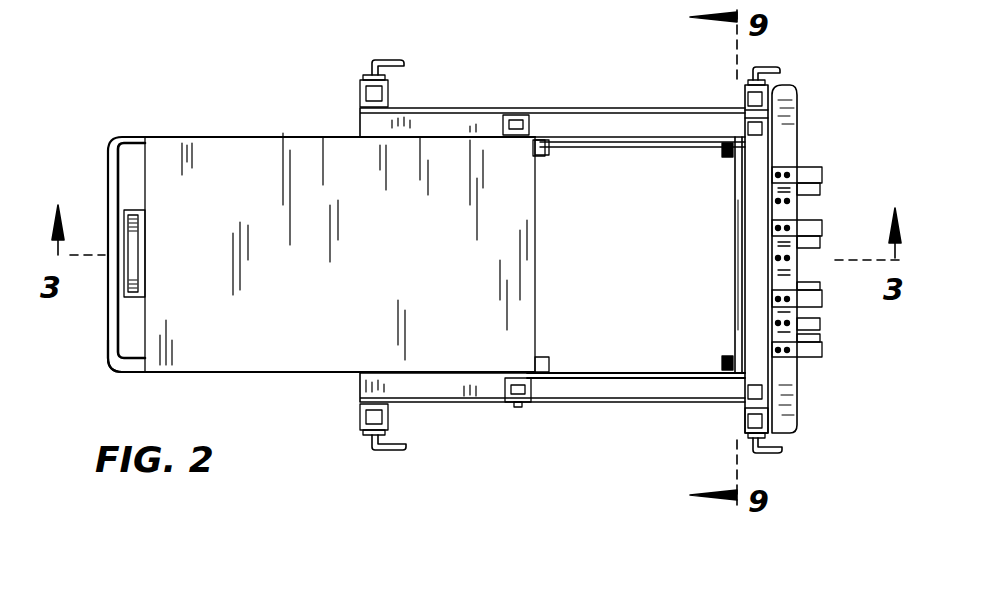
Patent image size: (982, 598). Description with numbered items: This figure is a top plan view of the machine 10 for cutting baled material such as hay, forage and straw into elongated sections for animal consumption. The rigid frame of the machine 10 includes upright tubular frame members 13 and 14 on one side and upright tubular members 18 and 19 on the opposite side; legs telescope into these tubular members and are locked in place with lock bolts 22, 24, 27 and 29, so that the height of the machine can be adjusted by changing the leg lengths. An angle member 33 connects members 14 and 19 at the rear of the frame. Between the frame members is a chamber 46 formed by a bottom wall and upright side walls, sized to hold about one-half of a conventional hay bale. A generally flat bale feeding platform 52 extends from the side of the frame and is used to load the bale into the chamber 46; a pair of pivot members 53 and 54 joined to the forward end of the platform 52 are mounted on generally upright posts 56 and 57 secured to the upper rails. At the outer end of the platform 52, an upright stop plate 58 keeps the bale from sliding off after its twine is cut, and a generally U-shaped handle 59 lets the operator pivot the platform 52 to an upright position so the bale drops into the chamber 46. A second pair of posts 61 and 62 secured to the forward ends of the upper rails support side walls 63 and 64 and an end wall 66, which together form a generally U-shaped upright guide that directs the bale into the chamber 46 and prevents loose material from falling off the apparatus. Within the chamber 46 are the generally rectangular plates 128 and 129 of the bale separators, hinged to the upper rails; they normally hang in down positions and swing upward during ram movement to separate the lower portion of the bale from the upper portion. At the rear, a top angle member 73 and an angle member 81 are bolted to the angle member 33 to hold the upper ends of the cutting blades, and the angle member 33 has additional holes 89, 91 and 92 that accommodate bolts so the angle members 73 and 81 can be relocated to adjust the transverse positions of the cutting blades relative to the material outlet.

The machine 10 is at (641, 108).
The upright tubular frame member 13 is at (360, 418).
The upright tubular frame member 14 is at (745, 421).
The upright tubular member 18 is at (360, 92).
The upright tubular member 19 is at (745, 95).
The lock bolt 22 is at (388, 450).
The lock bolt 24 is at (792, 448).
The lock bolt 27 is at (384, 60).
The lock bolt 29 is at (778, 70).
The angle member 33 is at (790, 112).
The chamber 46 is at (612, 284).
The bale feeding platform 52 is at (262, 356).
The pivot member 53 is at (517, 408).
The pivot member 54 is at (514, 110).
The post 56 is at (505, 390).
The post 57 is at (503, 122).
The stop plate 58 is at (138, 238).
The handle 59 is at (114, 350).
The post 61 is at (745, 380).
The post 62 is at (745, 128).
The side wall 63 is at (648, 376).
The side wall 64 is at (648, 140).
The end wall 66 is at (735, 268).
The top angle member 73 is at (800, 356).
The angle member 81 is at (822, 305).
The hole 89 is at (800, 204).
The hole 91 is at (800, 258).
The hole 92 is at (798, 324).
The plate 128 is at (572, 370).
The plate 129 is at (584, 148).